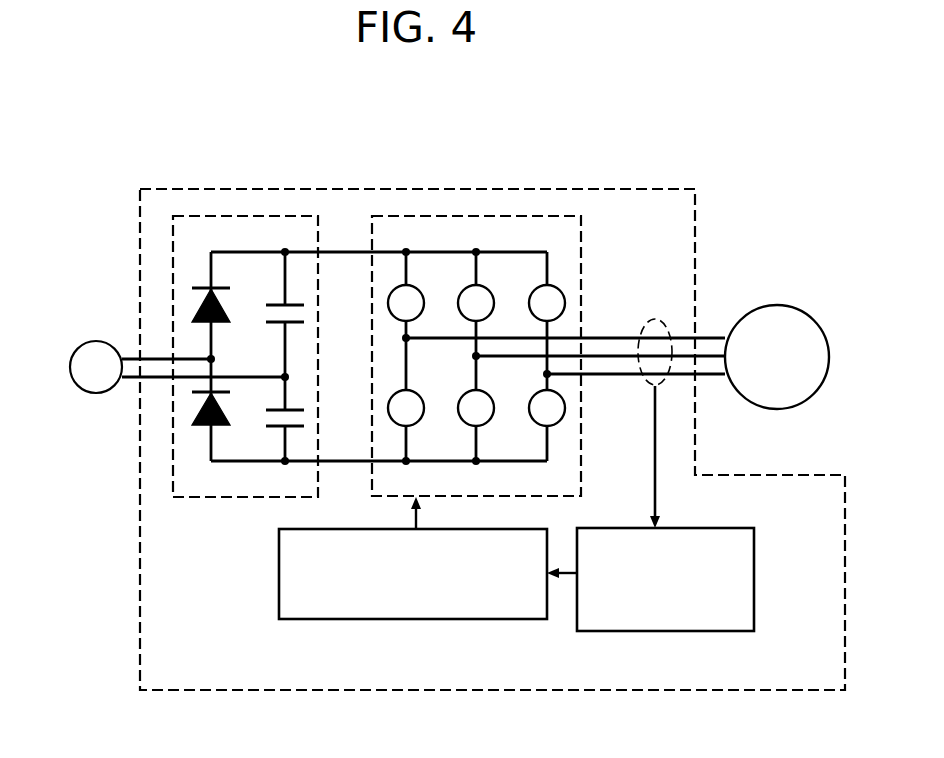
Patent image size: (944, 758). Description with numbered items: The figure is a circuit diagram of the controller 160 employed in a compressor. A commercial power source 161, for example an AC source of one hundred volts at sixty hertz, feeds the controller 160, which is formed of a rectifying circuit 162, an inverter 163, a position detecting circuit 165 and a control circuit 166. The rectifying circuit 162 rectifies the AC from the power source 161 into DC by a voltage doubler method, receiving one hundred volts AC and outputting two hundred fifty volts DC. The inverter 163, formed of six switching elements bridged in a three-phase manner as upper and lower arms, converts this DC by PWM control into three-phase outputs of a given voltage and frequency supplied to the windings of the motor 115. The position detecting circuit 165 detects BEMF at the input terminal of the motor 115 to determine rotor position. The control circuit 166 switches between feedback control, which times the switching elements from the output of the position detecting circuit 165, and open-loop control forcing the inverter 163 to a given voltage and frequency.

The motor 115 is at (765, 306).
The controller 160 is at (630, 190).
The commercial power source 161 is at (85, 342).
The rectifying circuit 162 is at (248, 215).
The inverter 163 is at (475, 215).
The position detecting circuit 165 is at (659, 632).
The control circuit 166 is at (415, 620).